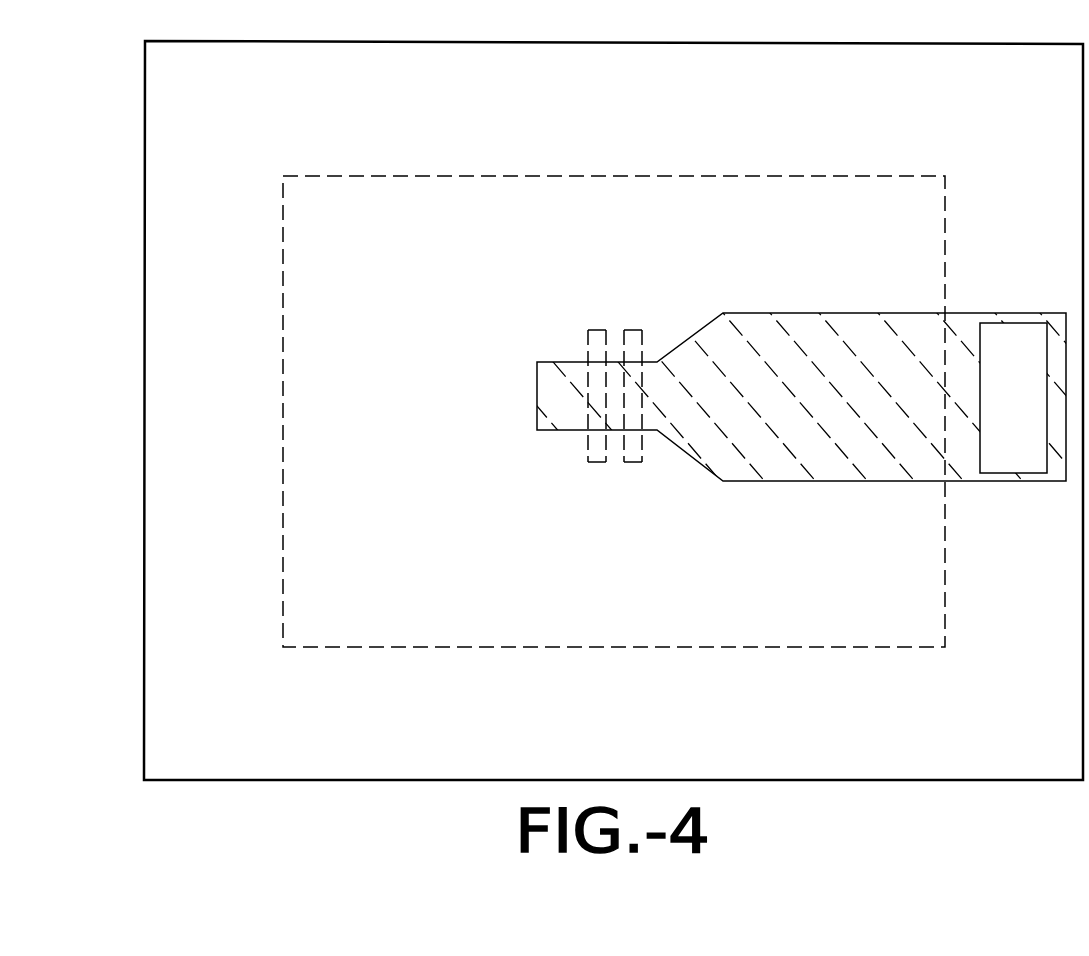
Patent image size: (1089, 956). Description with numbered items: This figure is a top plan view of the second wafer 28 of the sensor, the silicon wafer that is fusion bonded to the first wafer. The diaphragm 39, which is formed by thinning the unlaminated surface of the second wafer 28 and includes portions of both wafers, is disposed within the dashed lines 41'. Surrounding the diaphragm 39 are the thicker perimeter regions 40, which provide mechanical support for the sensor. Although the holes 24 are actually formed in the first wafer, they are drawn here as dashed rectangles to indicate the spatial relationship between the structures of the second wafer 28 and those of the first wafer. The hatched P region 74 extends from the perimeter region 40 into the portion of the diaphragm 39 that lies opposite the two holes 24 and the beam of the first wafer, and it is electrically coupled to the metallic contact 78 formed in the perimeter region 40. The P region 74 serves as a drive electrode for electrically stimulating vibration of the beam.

The holes 24 is at (633, 322).
The second silicon wafer 28 is at (878, 44).
The diaphragm 39 is at (760, 264).
The perimeter regions 40 is at (1013, 130).
The dashed lines 41' is at (614, 411).
The P region 74 is at (880, 398).
The metallic contact 78 is at (1028, 410).